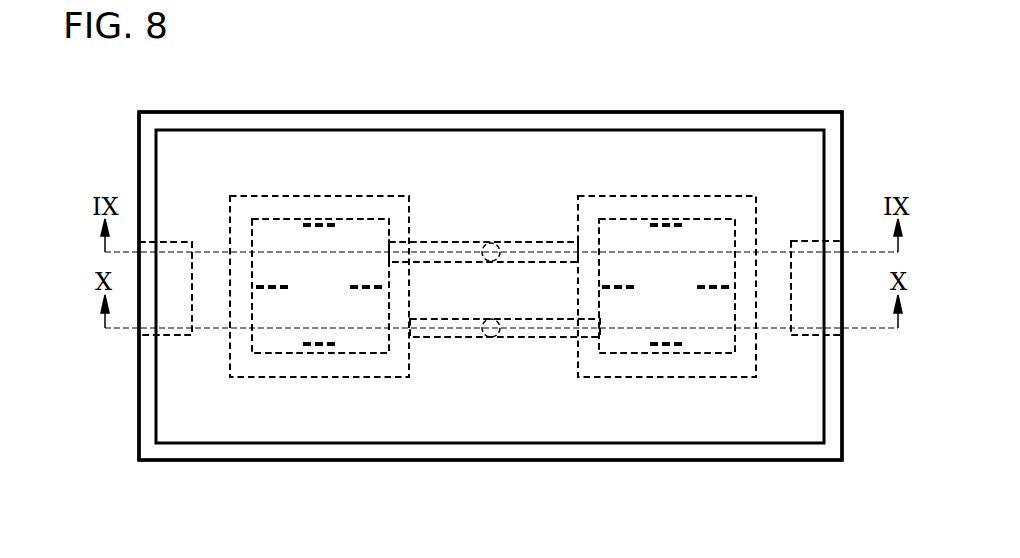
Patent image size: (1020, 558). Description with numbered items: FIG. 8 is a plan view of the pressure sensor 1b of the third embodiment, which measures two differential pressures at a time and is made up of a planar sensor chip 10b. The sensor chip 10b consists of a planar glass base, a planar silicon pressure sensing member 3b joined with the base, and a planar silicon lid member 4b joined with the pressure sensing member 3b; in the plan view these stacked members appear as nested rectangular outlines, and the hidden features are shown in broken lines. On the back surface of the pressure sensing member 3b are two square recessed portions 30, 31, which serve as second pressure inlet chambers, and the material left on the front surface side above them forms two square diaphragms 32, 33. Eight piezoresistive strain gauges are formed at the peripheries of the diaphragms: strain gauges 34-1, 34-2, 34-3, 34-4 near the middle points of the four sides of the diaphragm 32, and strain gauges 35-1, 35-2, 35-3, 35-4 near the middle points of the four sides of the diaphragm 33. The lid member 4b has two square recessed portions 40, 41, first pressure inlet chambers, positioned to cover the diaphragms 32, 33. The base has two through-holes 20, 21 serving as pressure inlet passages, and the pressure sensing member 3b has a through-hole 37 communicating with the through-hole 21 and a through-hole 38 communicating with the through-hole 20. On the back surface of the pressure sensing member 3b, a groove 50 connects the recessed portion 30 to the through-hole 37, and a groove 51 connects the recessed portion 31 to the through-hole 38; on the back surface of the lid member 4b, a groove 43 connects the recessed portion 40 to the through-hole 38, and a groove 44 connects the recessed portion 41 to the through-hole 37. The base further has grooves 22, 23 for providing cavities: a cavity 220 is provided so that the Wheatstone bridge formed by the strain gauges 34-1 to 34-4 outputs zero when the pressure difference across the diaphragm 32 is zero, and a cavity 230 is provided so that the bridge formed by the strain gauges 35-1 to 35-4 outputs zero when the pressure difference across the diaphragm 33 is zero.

The pressure sensor 1b is at (515, 32).
The sensor chip 10b is at (160, 110).
The pressure sensing member 3b is at (845, 137).
The lid member 4b is at (155, 402).
The recessed portion 41 is at (364, 196).
The recessed portion 40 is at (648, 196).
The recessed portion 31 is at (268, 218).
The diaphragm 33 is at (312, 277).
The diaphragm 32 is at (672, 280).
The recessed portion 30 is at (738, 338).
The cavity 230 is at (172, 277).
The groove 23 is at (167, 338).
The cavity 220 is at (807, 270).
The groove 22 is at (798, 335).
The groove 51 is at (429, 242).
The groove 43 is at (541, 242).
The through-hole 20 is at (532, 161).
The through-hole 38 is at (492, 242).
The groove 44 is at (437, 338).
The groove 50 is at (563, 338).
The through-hole 21 is at (464, 420).
The through-hole 37 is at (492, 338).
The strain gauge 35-1 is at (310, 226).
The strain gauge 35-2 is at (371, 287).
The strain gauge 35-3 is at (268, 287).
The strain gauge 35-4 is at (312, 347).
The strain gauge 34-1 is at (679, 225).
The strain gauge 34-2 is at (702, 288).
The strain gauge 34-3 is at (608, 288).
The strain gauge 34-4 is at (673, 347).